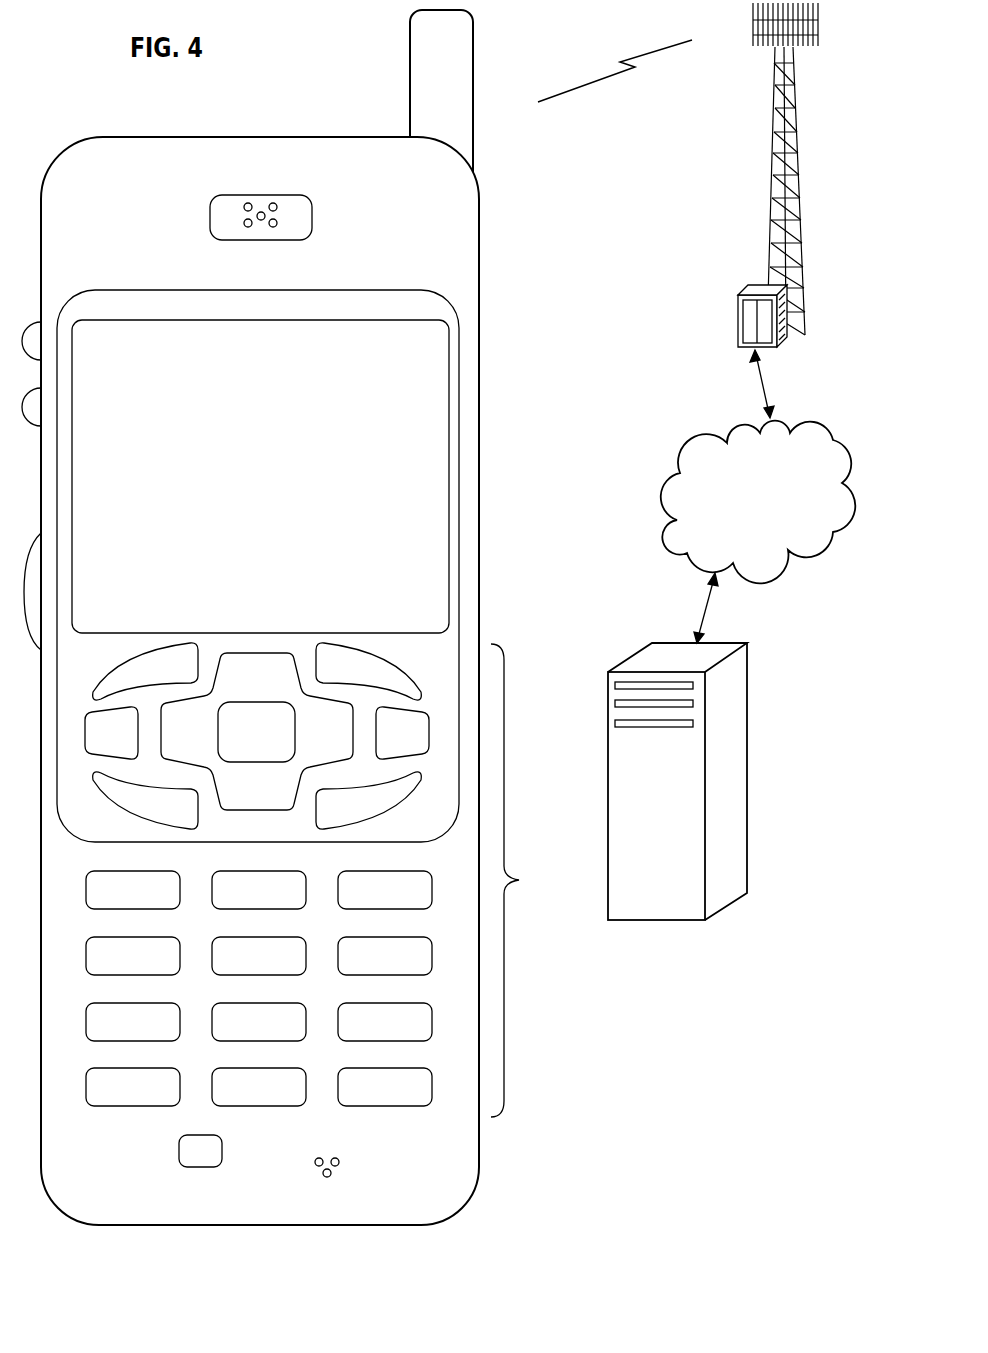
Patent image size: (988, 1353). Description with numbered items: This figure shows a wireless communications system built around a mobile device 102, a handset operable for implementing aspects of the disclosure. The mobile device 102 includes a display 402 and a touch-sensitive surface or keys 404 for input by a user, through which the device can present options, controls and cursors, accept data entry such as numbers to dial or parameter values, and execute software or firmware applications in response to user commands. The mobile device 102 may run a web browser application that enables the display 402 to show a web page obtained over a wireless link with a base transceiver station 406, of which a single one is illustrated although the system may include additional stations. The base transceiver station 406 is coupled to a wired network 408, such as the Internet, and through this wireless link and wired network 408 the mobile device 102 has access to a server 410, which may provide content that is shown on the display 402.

The mobile device 102 is at (90, 1222).
The display 402 is at (449, 336).
The touch-sensitive surface or keys 404 is at (522, 880).
The base transceiver station 406 is at (768, 190).
The wired network 408 is at (680, 548).
The server 410 is at (652, 921).